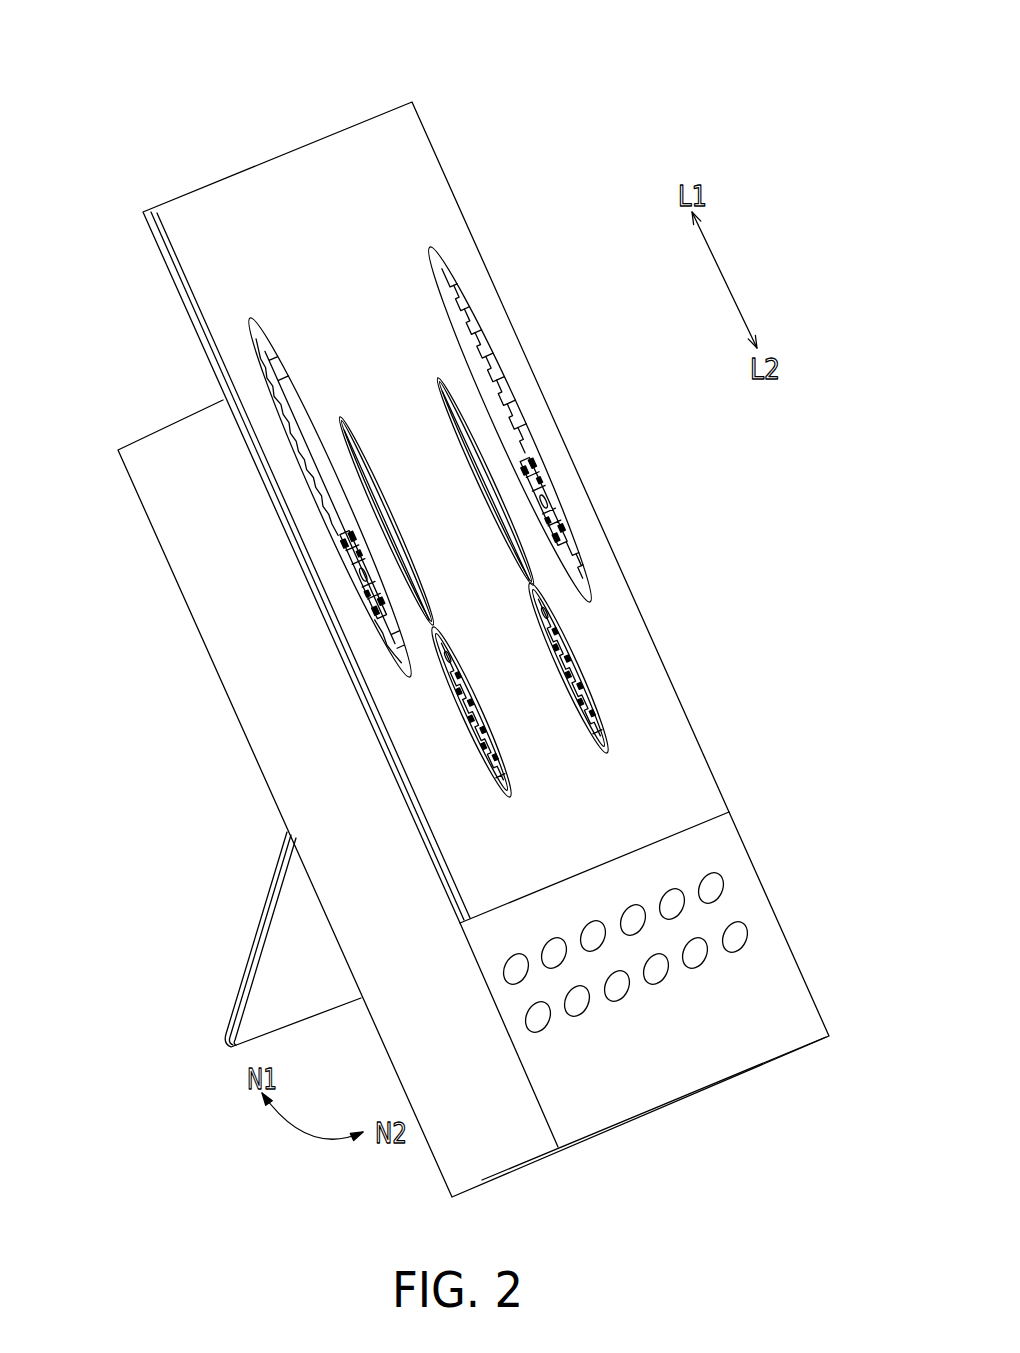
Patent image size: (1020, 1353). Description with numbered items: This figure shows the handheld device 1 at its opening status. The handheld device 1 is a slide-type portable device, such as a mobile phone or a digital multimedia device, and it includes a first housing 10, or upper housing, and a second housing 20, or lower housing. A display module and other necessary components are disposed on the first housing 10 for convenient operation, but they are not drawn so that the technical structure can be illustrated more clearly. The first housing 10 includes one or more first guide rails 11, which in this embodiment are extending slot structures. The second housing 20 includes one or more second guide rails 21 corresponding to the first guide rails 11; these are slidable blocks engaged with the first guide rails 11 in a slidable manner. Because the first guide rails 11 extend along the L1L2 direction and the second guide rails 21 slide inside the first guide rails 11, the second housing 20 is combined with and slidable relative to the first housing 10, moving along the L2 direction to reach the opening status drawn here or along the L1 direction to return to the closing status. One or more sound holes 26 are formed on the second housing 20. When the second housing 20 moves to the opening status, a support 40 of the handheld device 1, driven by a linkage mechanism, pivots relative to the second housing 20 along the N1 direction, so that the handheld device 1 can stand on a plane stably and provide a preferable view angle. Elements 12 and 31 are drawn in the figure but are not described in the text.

The handheld device 1 is at (583, 110).
The first housing 10 is at (413, 158).
The first guide rails 11 is at (362, 508).
The light emitting slot 12 is at (453, 290).
The second housing 20 is at (760, 965).
The second guide rails 21 is at (571, 662).
The sound holes 26 is at (714, 884).
The connector module 31 is at (543, 488).
The support 40 is at (263, 983).